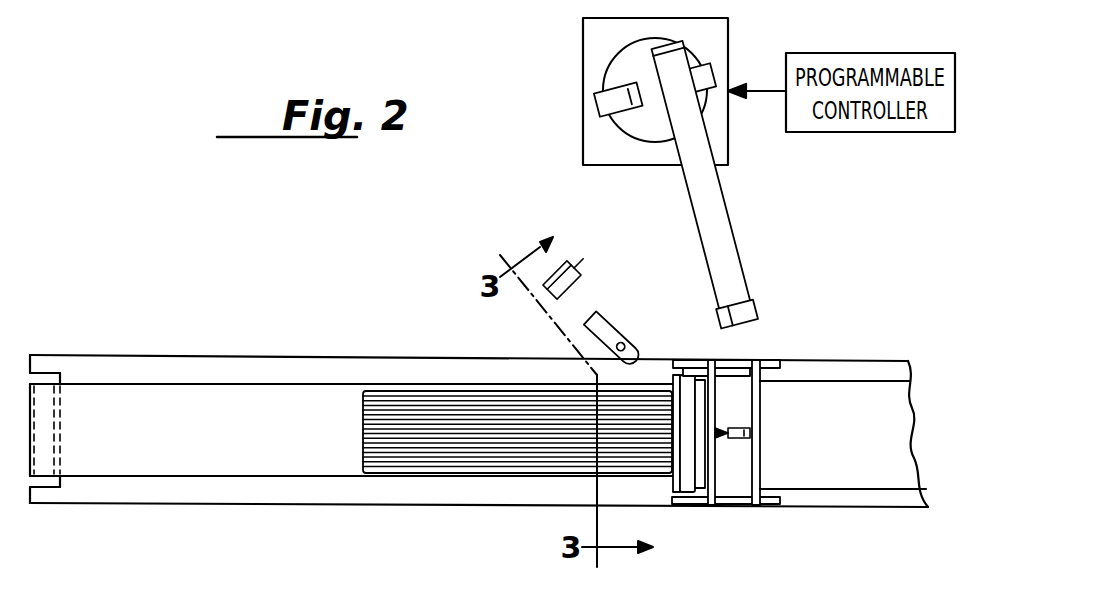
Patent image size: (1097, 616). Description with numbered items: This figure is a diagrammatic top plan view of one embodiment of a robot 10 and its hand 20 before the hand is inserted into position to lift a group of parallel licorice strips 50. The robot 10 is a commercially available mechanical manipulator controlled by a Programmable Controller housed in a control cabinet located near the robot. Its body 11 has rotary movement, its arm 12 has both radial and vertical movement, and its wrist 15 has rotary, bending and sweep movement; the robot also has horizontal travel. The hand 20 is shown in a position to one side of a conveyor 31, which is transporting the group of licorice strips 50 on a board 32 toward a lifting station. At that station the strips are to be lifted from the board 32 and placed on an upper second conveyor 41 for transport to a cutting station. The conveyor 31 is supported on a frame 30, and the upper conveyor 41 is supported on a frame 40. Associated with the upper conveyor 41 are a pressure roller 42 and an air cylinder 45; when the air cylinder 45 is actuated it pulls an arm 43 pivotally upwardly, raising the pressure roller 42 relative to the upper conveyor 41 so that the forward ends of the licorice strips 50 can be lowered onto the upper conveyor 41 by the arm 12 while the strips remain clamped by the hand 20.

The robot 10 is at (597, 40).
The body 11 is at (692, 72).
The arm 12 is at (627, 212).
The wrist 15 is at (599, 322).
The hand 20 is at (648, 320).
The frame 30 is at (242, 495).
The conveyor 31 is at (273, 407).
The board 32 is at (489, 476).
The frame 40 is at (872, 500).
The upper second conveyor 41 is at (822, 403).
The pressure roller 42 is at (700, 362).
The arm 43 is at (718, 510).
The air cylinder 45 is at (740, 443).
The licorice strips 50 is at (493, 477).